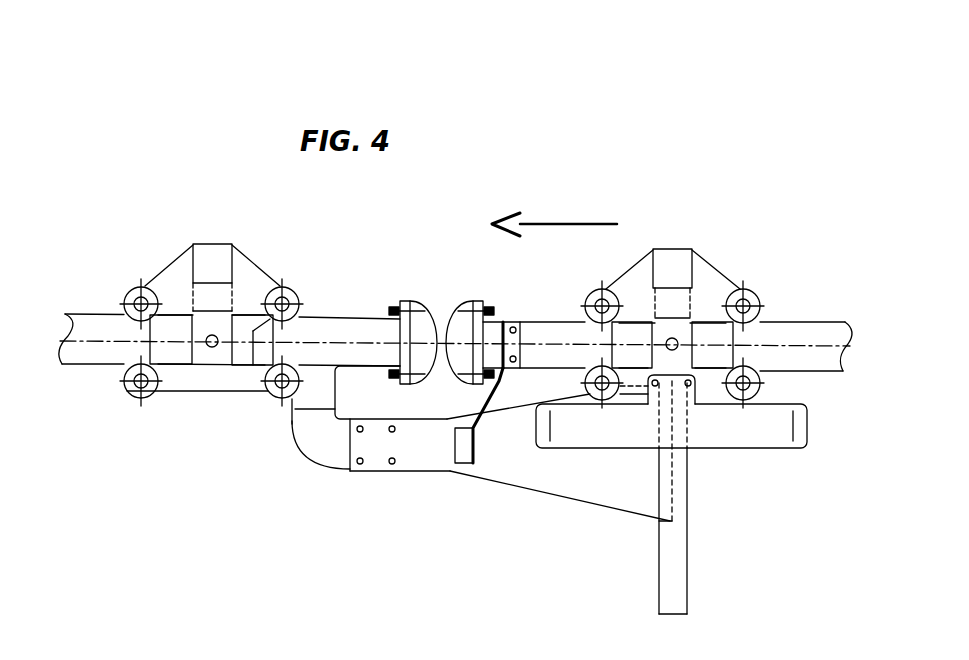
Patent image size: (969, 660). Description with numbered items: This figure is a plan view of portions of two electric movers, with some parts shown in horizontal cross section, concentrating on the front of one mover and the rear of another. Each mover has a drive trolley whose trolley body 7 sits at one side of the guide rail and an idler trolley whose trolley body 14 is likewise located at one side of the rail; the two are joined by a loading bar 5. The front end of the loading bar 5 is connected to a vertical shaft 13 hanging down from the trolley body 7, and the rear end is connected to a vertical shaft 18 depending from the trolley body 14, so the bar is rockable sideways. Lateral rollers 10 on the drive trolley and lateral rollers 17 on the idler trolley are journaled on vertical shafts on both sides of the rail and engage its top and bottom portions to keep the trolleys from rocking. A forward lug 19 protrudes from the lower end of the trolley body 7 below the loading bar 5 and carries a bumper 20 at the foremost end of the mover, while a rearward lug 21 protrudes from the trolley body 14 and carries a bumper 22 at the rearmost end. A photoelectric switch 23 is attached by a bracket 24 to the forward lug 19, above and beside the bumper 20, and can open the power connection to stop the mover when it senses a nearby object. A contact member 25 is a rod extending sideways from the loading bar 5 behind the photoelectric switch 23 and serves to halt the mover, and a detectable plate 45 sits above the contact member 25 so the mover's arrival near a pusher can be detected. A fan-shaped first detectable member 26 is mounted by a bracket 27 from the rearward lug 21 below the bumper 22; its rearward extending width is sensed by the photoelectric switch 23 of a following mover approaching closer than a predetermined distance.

The loading bar 5 is at (83, 323).
The trolley body 7 is at (673, 250).
The lateral rollers 10 is at (603, 288).
The vertical shaft 13 is at (674, 338).
The trolley body 14 is at (213, 243).
The lateral rollers 17 is at (128, 313).
The vertical shaft 18 is at (211, 347).
The forward lug 19 is at (546, 333).
The bumper 20 is at (463, 323).
The rearward lug 21 is at (334, 332).
The bumper 22 is at (420, 323).
The photoelectric switch 23 is at (406, 483).
The bracket 24 is at (487, 412).
The contact member 25 is at (677, 575).
The first detectable member 26 is at (600, 486).
The bracket 27 is at (318, 438).
The detectable plate 45 is at (671, 443).